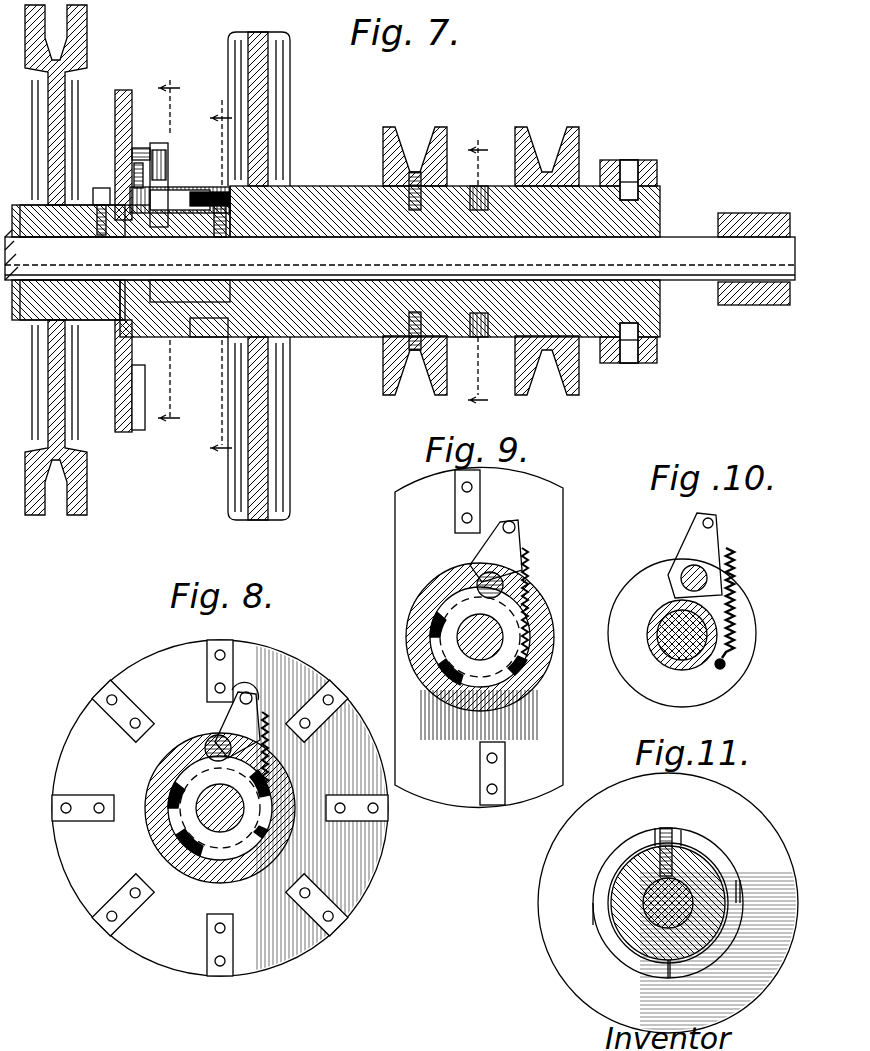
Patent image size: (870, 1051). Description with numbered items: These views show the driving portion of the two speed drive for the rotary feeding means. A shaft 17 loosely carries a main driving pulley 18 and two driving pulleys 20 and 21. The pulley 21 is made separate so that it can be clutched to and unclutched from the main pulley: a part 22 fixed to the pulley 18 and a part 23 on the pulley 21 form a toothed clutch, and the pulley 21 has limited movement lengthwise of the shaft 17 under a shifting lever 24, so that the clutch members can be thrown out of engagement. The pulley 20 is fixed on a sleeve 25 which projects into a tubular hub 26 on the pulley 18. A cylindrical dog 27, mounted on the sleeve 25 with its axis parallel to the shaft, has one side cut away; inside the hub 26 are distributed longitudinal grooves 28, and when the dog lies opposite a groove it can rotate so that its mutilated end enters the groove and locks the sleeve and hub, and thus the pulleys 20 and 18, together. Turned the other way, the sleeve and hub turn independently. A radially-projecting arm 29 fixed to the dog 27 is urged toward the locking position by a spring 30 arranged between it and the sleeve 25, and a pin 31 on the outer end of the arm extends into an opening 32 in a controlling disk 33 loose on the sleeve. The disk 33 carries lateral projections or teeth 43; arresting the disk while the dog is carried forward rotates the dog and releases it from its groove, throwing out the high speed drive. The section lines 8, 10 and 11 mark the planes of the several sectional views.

In FIG. 7, the section line 8— 8 is at (219, 284).
In FIG. 7, the section line 10— 10 is at (171, 250).
In FIG. 7, the section line 11— 11 is at (475, 269).
In FIG. 7, the shaft 17 is at (682, 236).
In FIG. 8, the shaft 17 is at (212, 822).
In FIG. 9, the shaft 17 is at (458, 632).
In FIG. 10, the shaft 17 is at (668, 660).
In FIG. 11, the shaft 17 is at (645, 915).
In FIG. 7, the main driving pulley 18 is at (290, 72).
In FIG. 7, the driving pulley 20 is at (86, 38).
In FIG. 7, the driving pulley 21 is at (575, 150).
In FIG. 7, the clutch part 22 is at (468, 186).
In FIG. 11, the clutch part 22 is at (600, 878).
In FIG. 7, the clutch part 23 is at (500, 185).
In FIG. 7, the shifting lever 24 is at (660, 362).
In FIG. 7, the sleeve 25 is at (36, 226).
In FIG. 9, the sleeve 25 is at (448, 682).
In FIG. 7, the tubular hub 26 is at (210, 338).
In FIG. 8, the tubular hub 26 is at (150, 792).
In FIG. 9, the tubular hub 26 is at (415, 608).
In FIG. 7, the cylindrical dog 27 is at (180, 206).
In FIG. 8, the cylindrical dog 27 is at (212, 740).
In FIG. 9, the cylindrical dog 27 is at (500, 585).
In FIG. 10, the cylindrical dog 27 is at (680, 585).
In FIG. 7, the longitudinal grooves 28 is at (210, 192).
In FIG. 8, the longitudinal grooves 28 is at (165, 838).
In FIG. 9, the longitudinal grooves 28 is at (475, 572).
In FIG. 7, the radially-projecting arm 29 is at (162, 168).
In FIG. 8, the radially-projecting arm 29 is at (237, 725).
In FIG. 9, the radially-projecting arm 29 is at (508, 540).
In FIG. 10, the radially-projecting arm 29 is at (692, 545).
In FIG. 8, the spring 30 is at (270, 740).
In FIG. 9, the spring 30 is at (530, 562).
In FIG. 10, the spring 30 is at (735, 568).
In FIG. 7, the pin 31 is at (140, 150).
In FIG. 8, the pin 31 is at (250, 698).
In FIG. 9, the pin 31 is at (507, 522).
In FIG. 10, the pin 31 is at (714, 522).
In FIG. 8, the opening 32 is at (236, 692).
In FIG. 7, the controlling disk 33 is at (122, 435).
In FIG. 8, the controlling disk 33 is at (135, 662).
In FIG. 9, the controlling disk 33 is at (400, 492).
In FIG. 7, the lateral projections 43 is at (142, 388).
In FIG. 8, the lateral projections 43 is at (200, 940).
In FIG. 9, the lateral projections 43 is at (455, 505).